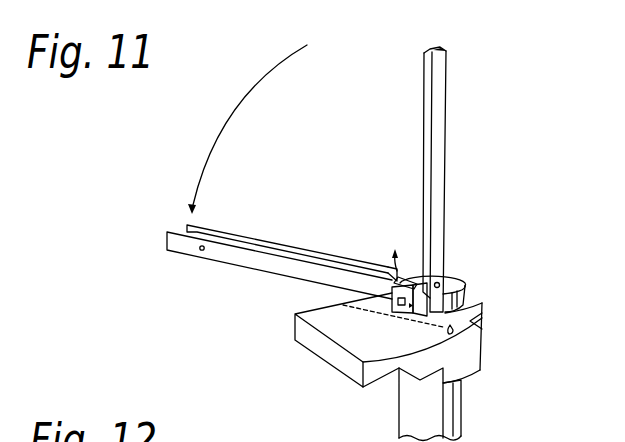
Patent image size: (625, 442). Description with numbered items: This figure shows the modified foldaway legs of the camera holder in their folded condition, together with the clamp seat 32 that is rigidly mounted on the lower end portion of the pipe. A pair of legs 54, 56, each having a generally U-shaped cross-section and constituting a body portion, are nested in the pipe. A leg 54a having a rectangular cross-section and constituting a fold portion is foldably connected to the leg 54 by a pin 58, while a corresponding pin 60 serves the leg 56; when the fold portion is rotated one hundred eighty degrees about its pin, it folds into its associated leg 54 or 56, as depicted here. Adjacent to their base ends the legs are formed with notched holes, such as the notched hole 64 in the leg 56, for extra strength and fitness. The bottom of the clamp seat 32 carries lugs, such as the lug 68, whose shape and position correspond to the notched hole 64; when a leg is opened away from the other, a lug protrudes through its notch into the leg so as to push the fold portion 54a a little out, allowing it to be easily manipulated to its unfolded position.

The clamp seat 32 is at (373, 383).
The leg 54 is at (260, 266).
The leg 54a is at (327, 250).
The leg 56 is at (447, 113).
The pin 58 is at (201, 251).
The pin 60 is at (424, 81).
The notched hole 64 is at (460, 283).
The lug 68 is at (482, 303).